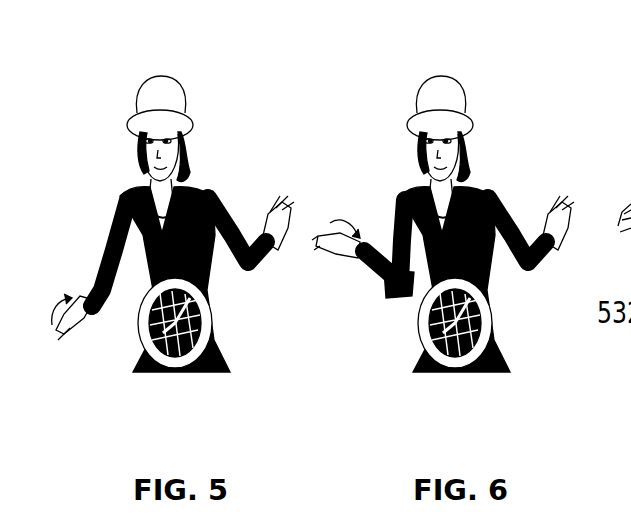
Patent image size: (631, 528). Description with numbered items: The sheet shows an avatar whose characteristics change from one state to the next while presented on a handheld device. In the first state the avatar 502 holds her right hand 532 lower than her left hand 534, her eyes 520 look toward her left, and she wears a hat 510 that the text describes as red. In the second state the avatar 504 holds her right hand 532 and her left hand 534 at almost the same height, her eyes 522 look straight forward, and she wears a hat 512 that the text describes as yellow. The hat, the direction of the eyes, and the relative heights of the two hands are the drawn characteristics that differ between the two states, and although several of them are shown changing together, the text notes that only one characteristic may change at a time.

In FIG. 5, the avatar 502 is at (174, 220).
In FIG. 6, the avatar 504 is at (460, 220).
In FIG. 5, the hat with letter R 510 is at (160, 77).
In FIG. 6, the hat with letter Y 512 is at (440, 77).
In FIG. 5, the eyes 520 is at (190, 137).
In FIG. 6, the eyes 522 is at (470, 137).
In FIG. 5, the right hand 532 is at (103, 290).
In FIG. 6, the right hand 532 is at (396, 296).
In FIG. 5, the left hand 534 is at (242, 256).
In FIG. 6, the left hand 534 is at (530, 256).